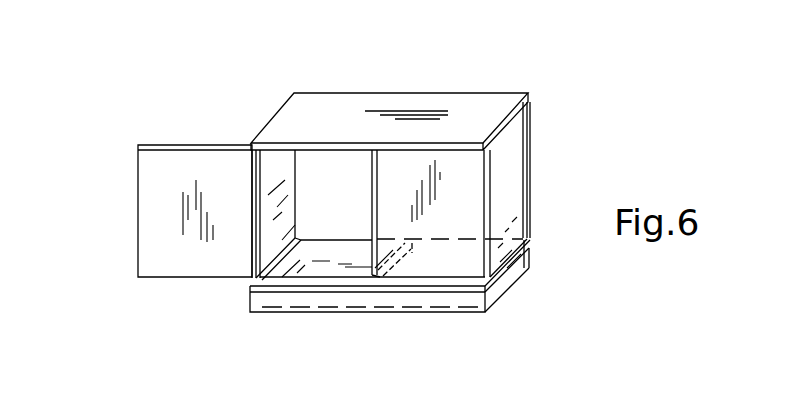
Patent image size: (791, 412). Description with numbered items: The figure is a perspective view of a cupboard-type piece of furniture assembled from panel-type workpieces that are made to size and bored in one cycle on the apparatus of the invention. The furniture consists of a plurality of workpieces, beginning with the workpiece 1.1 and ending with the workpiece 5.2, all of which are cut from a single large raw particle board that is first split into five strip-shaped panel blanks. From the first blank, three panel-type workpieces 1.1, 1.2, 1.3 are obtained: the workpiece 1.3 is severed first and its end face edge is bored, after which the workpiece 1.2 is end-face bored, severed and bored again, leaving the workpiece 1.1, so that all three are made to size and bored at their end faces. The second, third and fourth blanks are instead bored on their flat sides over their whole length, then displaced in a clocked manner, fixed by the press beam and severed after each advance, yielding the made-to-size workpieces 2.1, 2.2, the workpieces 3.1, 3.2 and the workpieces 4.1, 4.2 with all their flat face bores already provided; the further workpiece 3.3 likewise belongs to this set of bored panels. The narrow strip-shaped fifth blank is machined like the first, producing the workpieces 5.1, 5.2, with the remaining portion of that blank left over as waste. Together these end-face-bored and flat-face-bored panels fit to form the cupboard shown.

The panel-type workpiece 1.1 is at (278, 188).
The panel-type workpiece 1.2 is at (373, 205).
The panel-type workpiece 1.3 is at (512, 193).
The panel-type workpiece 2.1 is at (315, 122).
The panel-type workpiece 2.2 is at (326, 263).
The panel-type workpiece 3.1 is at (167, 167).
The panel-type workpiece 3.2 is at (355, 190).
The panel-type workpiece 3.3 is at (452, 205).
The panel-type workpiece 4.1 is at (303, 298).
The panel-type workpiece 4.2 is at (525, 268).
The panel-type workpiece 5.1 is at (262, 297).
The panel-type workpiece 5.2 is at (498, 288).